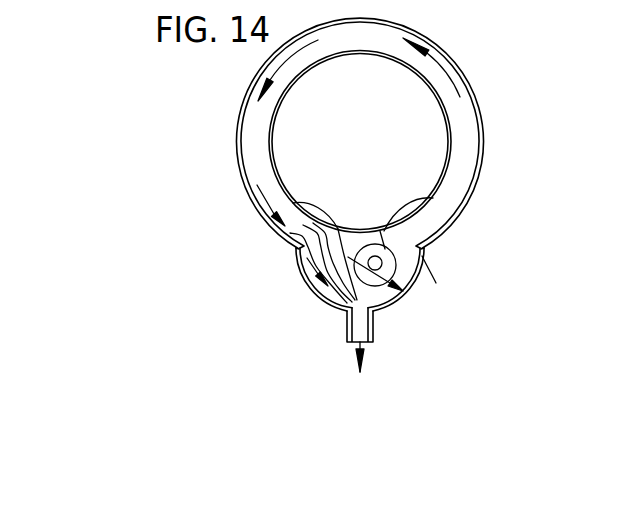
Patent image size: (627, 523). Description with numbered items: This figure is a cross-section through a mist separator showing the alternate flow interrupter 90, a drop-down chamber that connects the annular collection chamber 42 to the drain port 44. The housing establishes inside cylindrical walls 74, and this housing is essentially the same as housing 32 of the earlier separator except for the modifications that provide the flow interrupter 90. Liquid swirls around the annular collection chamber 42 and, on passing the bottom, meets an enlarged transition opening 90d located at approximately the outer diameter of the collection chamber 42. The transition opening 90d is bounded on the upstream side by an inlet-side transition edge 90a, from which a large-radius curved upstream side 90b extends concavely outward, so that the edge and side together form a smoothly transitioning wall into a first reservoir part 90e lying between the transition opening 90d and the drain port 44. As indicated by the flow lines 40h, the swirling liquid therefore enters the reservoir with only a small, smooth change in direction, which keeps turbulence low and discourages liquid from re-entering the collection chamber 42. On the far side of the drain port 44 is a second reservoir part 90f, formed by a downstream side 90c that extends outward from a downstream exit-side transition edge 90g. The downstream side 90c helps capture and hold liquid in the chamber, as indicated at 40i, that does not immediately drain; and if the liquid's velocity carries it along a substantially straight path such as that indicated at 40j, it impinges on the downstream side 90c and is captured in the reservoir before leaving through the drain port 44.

The housing 32 is at (467, 76).
The inside cylindrical walls 74 is at (478, 150).
The annular collection chamber 42 is at (258, 122).
The first reservoir part 90e is at (293, 203).
The captured liquid 40i is at (433, 198).
The transition opening 90d is at (290, 233).
The flow lines 40h is at (296, 248).
The inlet-side transition edge 90a is at (297, 250).
The upstream side 90b is at (307, 282).
The drain port 44 is at (346, 311).
The second reservoir part 90f is at (405, 252).
The exit-side transition edge 90g is at (398, 262).
The straight flow path 40j is at (422, 259).
The downstream side 90c is at (422, 265).
The flow interrupter 90 is at (415, 287).